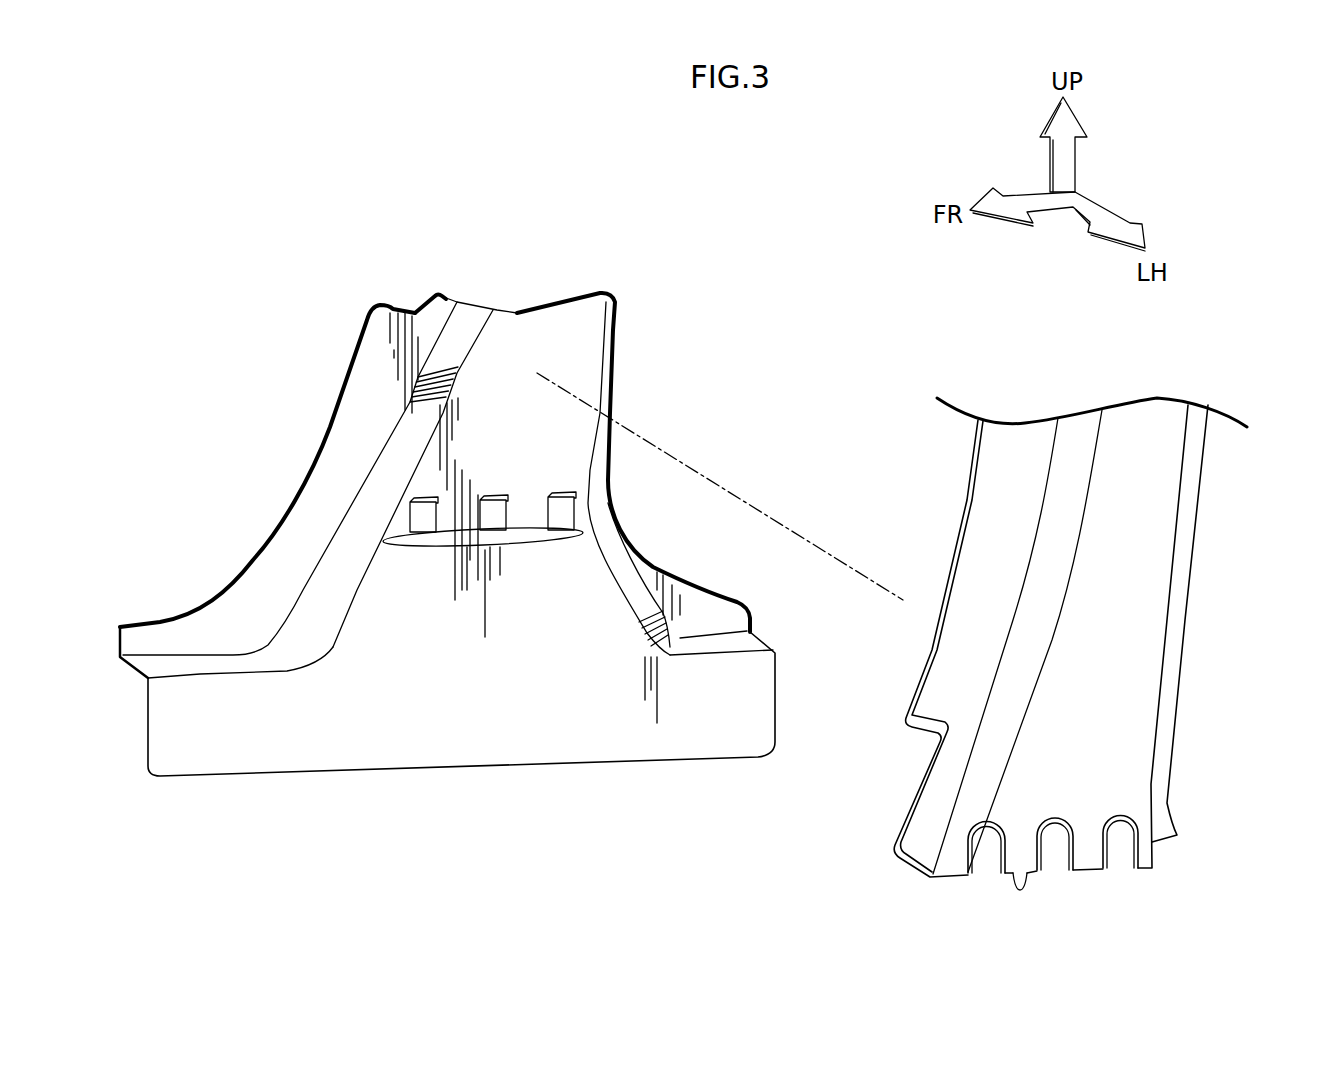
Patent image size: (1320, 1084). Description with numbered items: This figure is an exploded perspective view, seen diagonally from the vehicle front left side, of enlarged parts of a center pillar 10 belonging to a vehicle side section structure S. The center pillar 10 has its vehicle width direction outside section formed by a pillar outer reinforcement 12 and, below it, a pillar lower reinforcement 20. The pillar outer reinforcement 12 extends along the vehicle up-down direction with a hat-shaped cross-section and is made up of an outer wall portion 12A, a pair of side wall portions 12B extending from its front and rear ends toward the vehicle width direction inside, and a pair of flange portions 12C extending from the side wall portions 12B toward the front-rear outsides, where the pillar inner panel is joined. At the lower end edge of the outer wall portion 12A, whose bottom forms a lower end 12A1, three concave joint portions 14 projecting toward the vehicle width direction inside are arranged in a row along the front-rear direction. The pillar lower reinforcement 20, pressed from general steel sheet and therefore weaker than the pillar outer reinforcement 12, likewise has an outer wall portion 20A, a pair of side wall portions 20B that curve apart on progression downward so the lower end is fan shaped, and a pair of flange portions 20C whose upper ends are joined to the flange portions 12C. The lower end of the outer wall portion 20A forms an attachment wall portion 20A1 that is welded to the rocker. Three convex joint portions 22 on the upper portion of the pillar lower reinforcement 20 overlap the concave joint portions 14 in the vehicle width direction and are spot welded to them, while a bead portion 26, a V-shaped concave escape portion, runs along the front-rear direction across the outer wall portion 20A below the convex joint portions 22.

The vehicle side section structure S is at (790, 188).
The center pillar 10 is at (769, 265).
The pillar outer reinforcement 12 is at (1160, 395).
The outer wall portion 12A is at (1163, 481).
The lower end 12A1 is at (1025, 878).
The side wall portions 12B is at (1073, 432).
The flange portions 12C is at (990, 502).
The concave joint portions 14 is at (985, 860).
The pillar lower reinforcement 20 is at (559, 294).
The outer wall portion 20A is at (583, 338).
The attachment wall portion 20A1 is at (484, 745).
The side wall portions 20B is at (475, 317).
The flange portions 20C is at (341, 440).
The convex joint portions 22 is at (494, 506).
The bead portion 26 is at (527, 540).